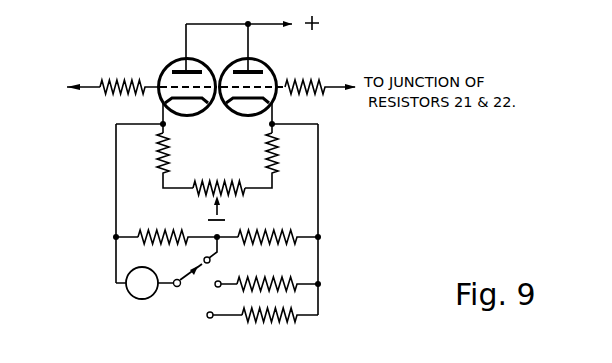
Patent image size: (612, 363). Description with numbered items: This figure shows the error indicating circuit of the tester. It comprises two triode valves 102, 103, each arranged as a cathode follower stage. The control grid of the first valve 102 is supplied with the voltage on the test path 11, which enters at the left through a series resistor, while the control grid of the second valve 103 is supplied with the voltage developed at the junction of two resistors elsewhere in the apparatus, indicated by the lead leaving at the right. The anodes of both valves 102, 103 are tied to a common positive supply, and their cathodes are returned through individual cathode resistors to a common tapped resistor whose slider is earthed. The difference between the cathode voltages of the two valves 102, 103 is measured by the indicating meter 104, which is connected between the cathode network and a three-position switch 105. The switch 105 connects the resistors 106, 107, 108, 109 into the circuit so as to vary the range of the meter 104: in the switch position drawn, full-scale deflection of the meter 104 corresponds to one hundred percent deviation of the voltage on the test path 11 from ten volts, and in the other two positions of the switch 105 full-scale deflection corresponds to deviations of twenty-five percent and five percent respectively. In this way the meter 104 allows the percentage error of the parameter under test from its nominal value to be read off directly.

The test path 11 is at (87, 86).
The triode valve 102 is at (165, 63).
The triode valve 103 is at (272, 66).
The indicating meter 104 is at (142, 299).
The three-position switch 105 is at (191, 273).
The resistor 106 is at (166, 227).
The resistor 107 is at (267, 227).
The resistor 108 is at (268, 274).
The resistor 109 is at (262, 325).